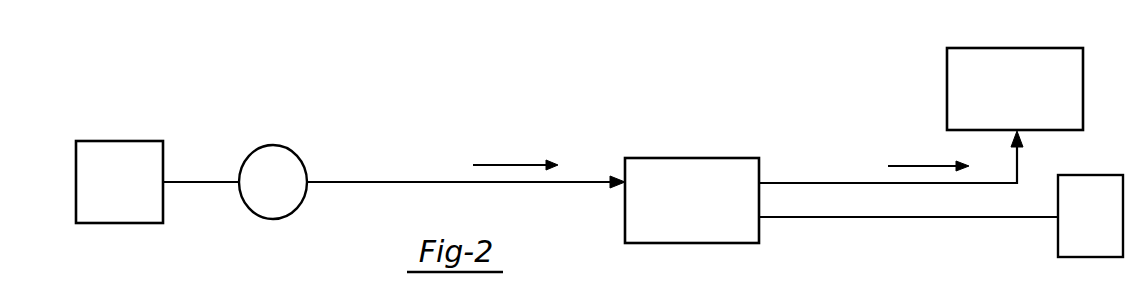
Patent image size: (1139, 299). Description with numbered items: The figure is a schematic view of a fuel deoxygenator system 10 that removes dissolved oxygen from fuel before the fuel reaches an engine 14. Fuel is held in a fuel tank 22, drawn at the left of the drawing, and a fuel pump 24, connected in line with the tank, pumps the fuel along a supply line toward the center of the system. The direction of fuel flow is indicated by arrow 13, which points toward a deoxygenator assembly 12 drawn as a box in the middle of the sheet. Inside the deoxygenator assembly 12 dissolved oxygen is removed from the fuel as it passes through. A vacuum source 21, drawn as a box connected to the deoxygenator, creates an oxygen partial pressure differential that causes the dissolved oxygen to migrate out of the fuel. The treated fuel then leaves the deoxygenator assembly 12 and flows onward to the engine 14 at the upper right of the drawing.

The fuel deoxygenator system 10 is at (768, 142).
The deoxygenator assembly 12 is at (690, 158).
The arrow indicating fuel flow 13 is at (508, 163).
The engine 14 is at (1085, 88).
The vacuum source 21 is at (1081, 231).
The fuel tank 22 is at (120, 141).
The fuel pump 24 is at (273, 219).